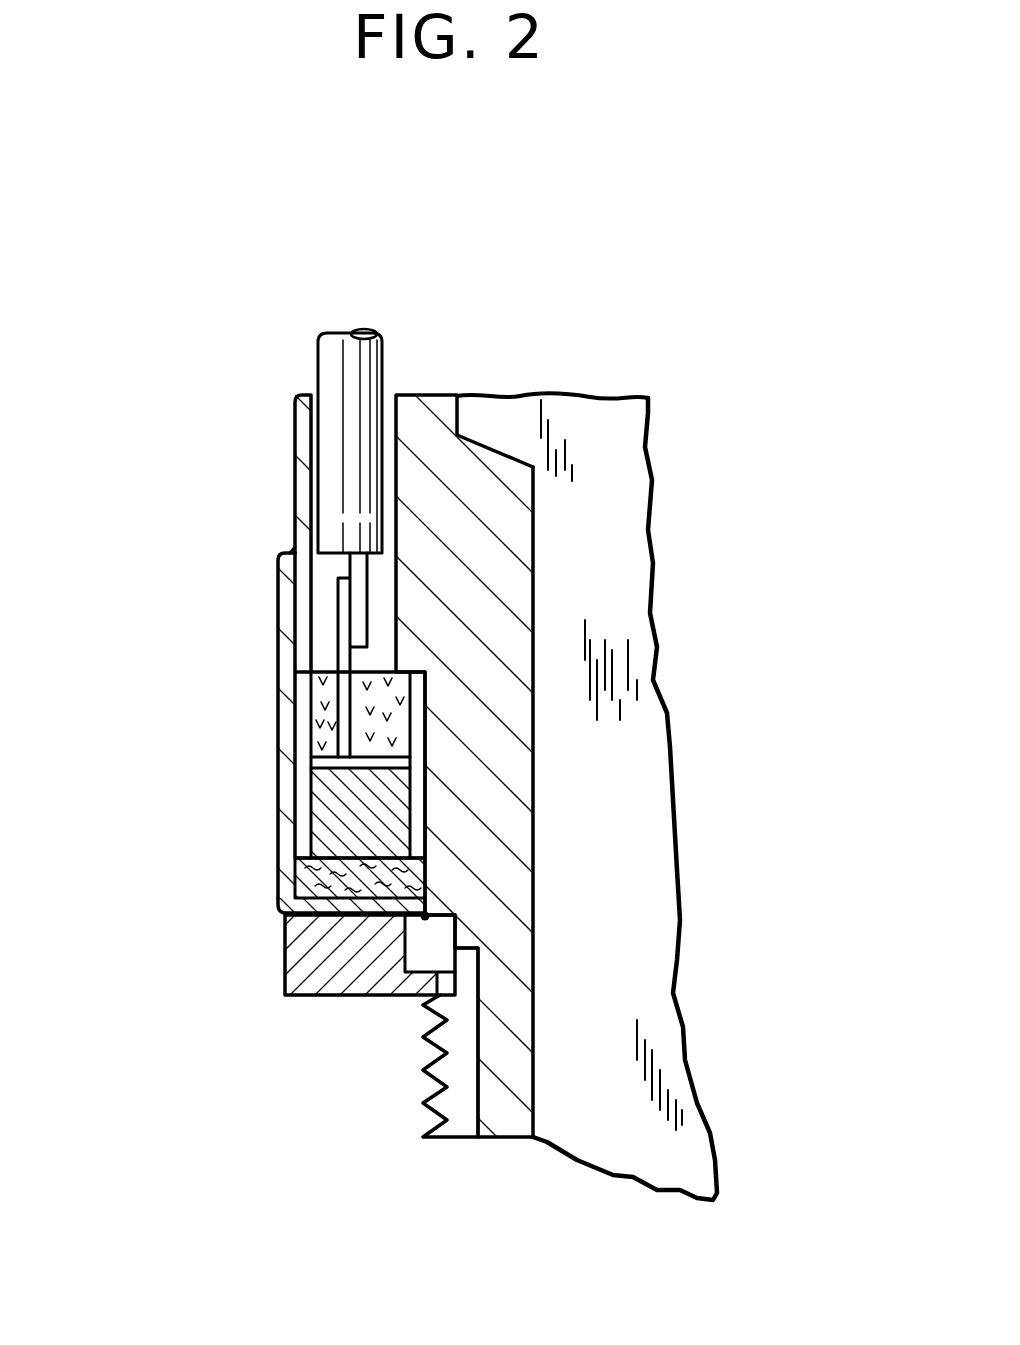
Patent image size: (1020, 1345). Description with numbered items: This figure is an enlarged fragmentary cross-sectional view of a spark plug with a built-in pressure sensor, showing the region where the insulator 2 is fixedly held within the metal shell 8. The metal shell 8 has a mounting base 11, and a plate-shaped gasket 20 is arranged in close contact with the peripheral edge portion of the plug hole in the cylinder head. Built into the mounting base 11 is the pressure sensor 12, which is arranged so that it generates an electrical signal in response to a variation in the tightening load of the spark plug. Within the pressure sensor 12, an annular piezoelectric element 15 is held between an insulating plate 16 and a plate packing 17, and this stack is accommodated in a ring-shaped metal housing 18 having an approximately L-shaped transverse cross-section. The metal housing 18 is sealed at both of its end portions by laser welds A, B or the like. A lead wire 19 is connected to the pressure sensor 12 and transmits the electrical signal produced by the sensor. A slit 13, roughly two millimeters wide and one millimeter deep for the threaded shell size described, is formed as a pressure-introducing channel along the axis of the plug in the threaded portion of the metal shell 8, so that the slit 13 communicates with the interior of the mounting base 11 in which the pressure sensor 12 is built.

The insulator 2 is at (610, 525).
The metal shell 8 is at (433, 435).
The mounting base 11 is at (493, 795).
The pressure sensor 12 is at (268, 647).
The slit 13 is at (465, 1118).
The annular piezoelectric element 15 is at (322, 797).
The insulating plate 16 is at (278, 699).
The plate packing 17 is at (292, 880).
The ring-shaped metal housing 18 is at (282, 910).
The lead wire 19 is at (317, 358).
The plate-shaped gasket 20 is at (285, 975).
The laser weld A is at (425, 915).
The laser weld B is at (287, 545).